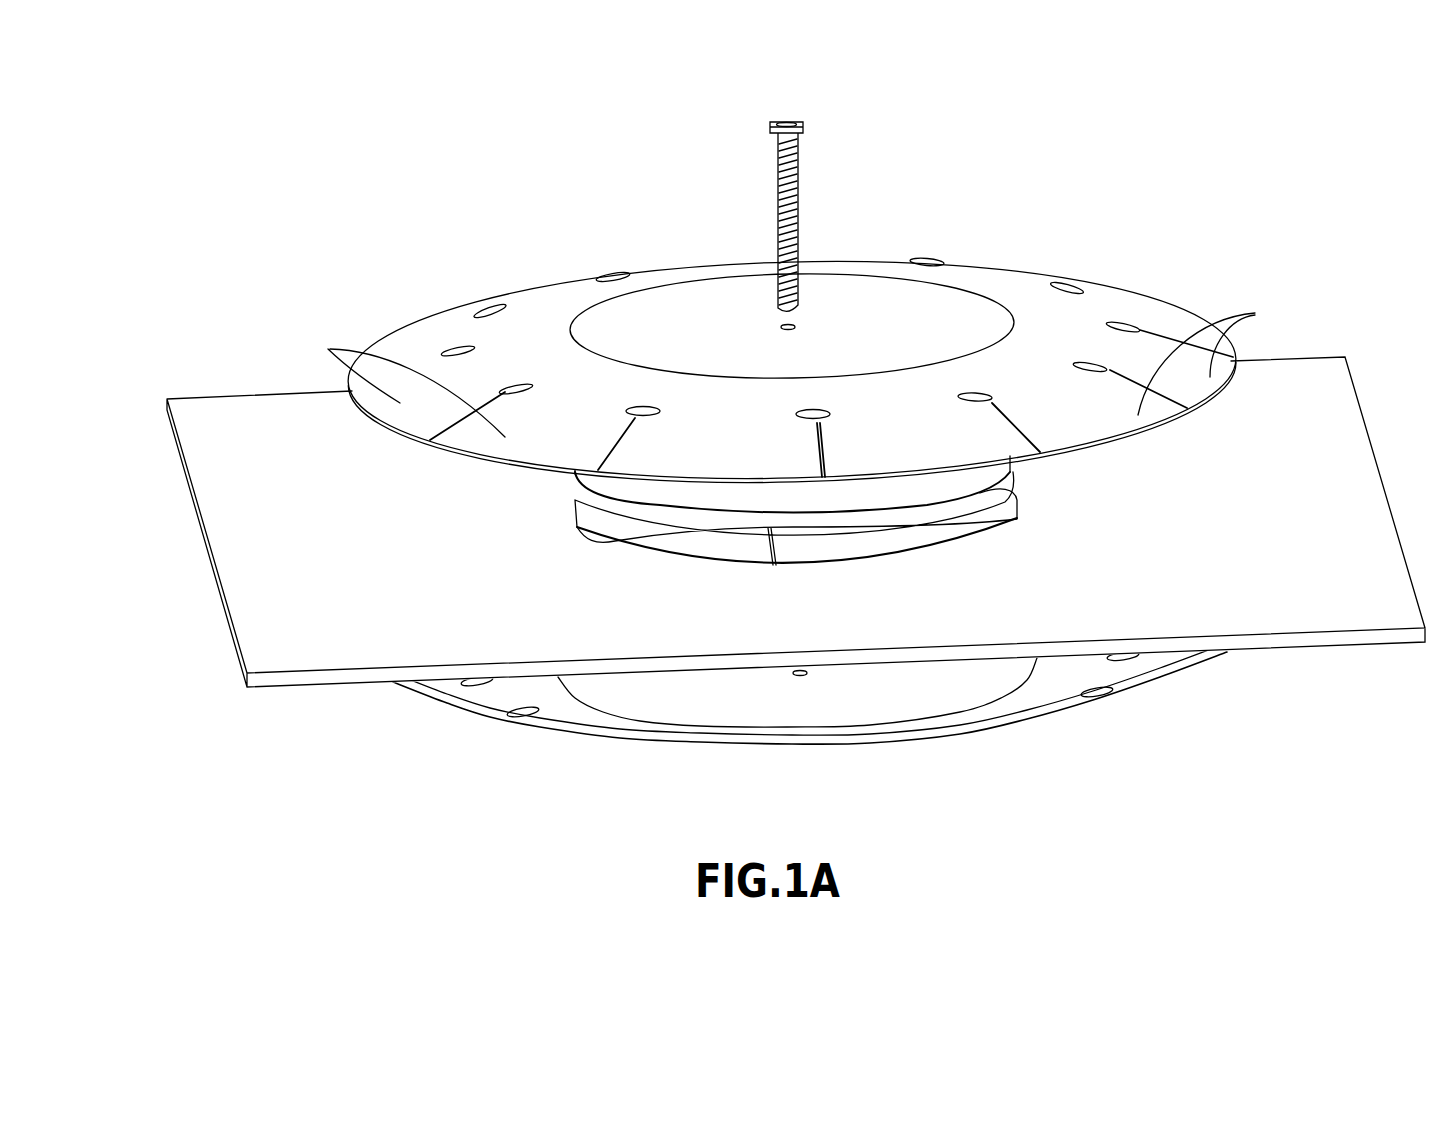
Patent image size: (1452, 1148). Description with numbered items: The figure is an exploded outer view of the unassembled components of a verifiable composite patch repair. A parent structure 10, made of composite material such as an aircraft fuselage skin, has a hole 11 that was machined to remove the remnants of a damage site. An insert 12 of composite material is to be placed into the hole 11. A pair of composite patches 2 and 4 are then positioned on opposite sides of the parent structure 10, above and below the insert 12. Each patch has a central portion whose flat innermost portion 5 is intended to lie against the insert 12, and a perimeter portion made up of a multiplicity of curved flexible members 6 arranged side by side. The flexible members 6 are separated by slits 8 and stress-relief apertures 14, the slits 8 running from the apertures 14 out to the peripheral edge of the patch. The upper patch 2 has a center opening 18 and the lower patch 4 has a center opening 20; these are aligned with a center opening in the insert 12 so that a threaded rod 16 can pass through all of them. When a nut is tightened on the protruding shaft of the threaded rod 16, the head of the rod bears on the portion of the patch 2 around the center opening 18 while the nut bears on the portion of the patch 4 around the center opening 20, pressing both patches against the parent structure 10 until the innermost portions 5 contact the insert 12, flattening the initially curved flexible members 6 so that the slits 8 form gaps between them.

The patch 2 is at (543, 286).
The patch 4 is at (550, 727).
The innermost portion 5 is at (717, 278).
The flexible members 6 is at (508, 389).
The slits 8 is at (622, 440).
The parent structure 10 is at (1287, 390).
The hole 11 is at (920, 550).
The insert 12 is at (1013, 470).
The stress-relief apertures 14 is at (808, 412).
The threaded rod 16 is at (800, 172).
The center opening 18 is at (800, 326).
The center opening 20 is at (805, 677).